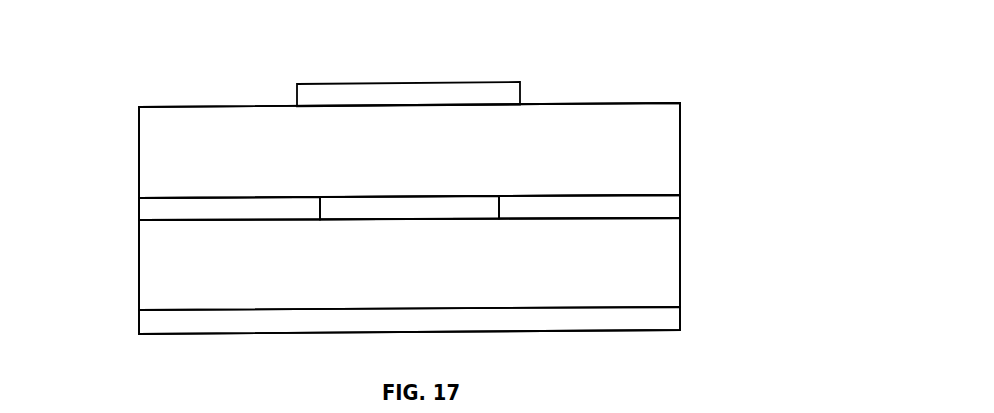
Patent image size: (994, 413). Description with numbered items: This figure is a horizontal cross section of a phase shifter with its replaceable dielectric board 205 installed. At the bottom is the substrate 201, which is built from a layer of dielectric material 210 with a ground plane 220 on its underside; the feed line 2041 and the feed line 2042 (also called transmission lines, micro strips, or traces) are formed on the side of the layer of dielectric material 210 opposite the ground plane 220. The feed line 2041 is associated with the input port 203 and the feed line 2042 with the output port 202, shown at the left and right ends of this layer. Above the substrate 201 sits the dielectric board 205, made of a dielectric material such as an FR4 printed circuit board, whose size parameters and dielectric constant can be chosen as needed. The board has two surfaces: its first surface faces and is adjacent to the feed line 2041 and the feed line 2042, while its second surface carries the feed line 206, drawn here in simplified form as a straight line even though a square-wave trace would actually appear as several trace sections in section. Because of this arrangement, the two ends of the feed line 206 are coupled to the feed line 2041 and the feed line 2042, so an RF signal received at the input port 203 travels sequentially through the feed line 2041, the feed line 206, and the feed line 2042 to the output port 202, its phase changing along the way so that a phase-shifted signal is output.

The substrate 201 is at (122, 112).
The output port 202 is at (680, 206).
The input port 203 is at (139, 210).
The feed line 2041 is at (222, 222).
The feed line 2042 is at (578, 219).
The replaceable dielectric board 205 is at (680, 148).
The feed line 206 is at (522, 92).
The layer of dielectric material 210 is at (680, 262).
The ground plane 220 is at (680, 317).